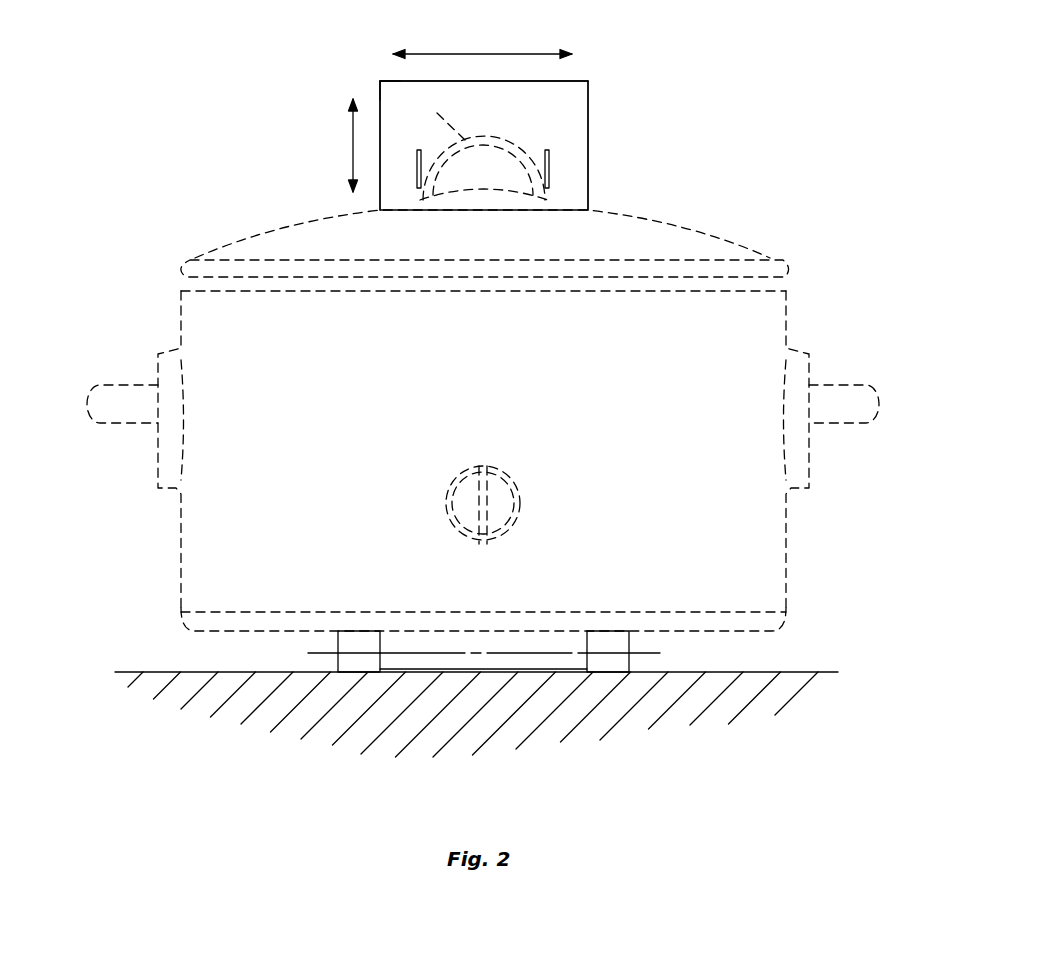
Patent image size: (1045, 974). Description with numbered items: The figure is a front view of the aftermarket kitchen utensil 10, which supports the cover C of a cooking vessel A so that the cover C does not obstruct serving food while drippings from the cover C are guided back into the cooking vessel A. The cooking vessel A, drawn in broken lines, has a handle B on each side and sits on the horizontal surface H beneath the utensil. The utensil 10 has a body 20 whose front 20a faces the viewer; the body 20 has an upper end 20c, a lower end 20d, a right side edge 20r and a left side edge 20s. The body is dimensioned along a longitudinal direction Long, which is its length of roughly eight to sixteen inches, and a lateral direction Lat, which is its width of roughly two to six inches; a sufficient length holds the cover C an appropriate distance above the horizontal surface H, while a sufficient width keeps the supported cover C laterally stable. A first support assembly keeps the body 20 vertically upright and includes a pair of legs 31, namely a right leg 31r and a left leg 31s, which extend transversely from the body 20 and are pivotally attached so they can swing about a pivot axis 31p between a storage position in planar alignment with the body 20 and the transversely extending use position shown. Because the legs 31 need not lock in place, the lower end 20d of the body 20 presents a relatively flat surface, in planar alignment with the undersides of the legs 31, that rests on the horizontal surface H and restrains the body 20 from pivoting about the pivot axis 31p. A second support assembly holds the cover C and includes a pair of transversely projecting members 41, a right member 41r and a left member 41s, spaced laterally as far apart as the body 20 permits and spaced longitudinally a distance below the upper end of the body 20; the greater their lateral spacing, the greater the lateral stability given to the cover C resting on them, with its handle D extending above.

The utensil 10 is at (544, 135).
The body 20 is at (588, 145).
The front surface of body 20a is at (570, 109).
The upper end of body 20c is at (393, 80).
The lower end of body 20d is at (512, 670).
The right side edge of body 20r is at (380, 92).
The left side edge of body 20s is at (588, 115).
The legs 31 is at (485, 726).
The pivot axis of legs 31p is at (318, 653).
The right leg 31r is at (360, 662).
The left leg 31s is at (610, 662).
The transversely projecting members 41 is at (492, 177).
The right support member 41r is at (418, 182).
The left support member 41s is at (548, 176).
The cooking vessel A is at (301, 343).
The handle on cooking vessel B is at (110, 425).
The cover of cooking vessel C is at (409, 250).
The handle on cover D is at (446, 114).
The horizontal surface H is at (258, 706).
The lateral direction of body Lat is at (472, 53).
The longitudinal direction of body Long is at (352, 142).